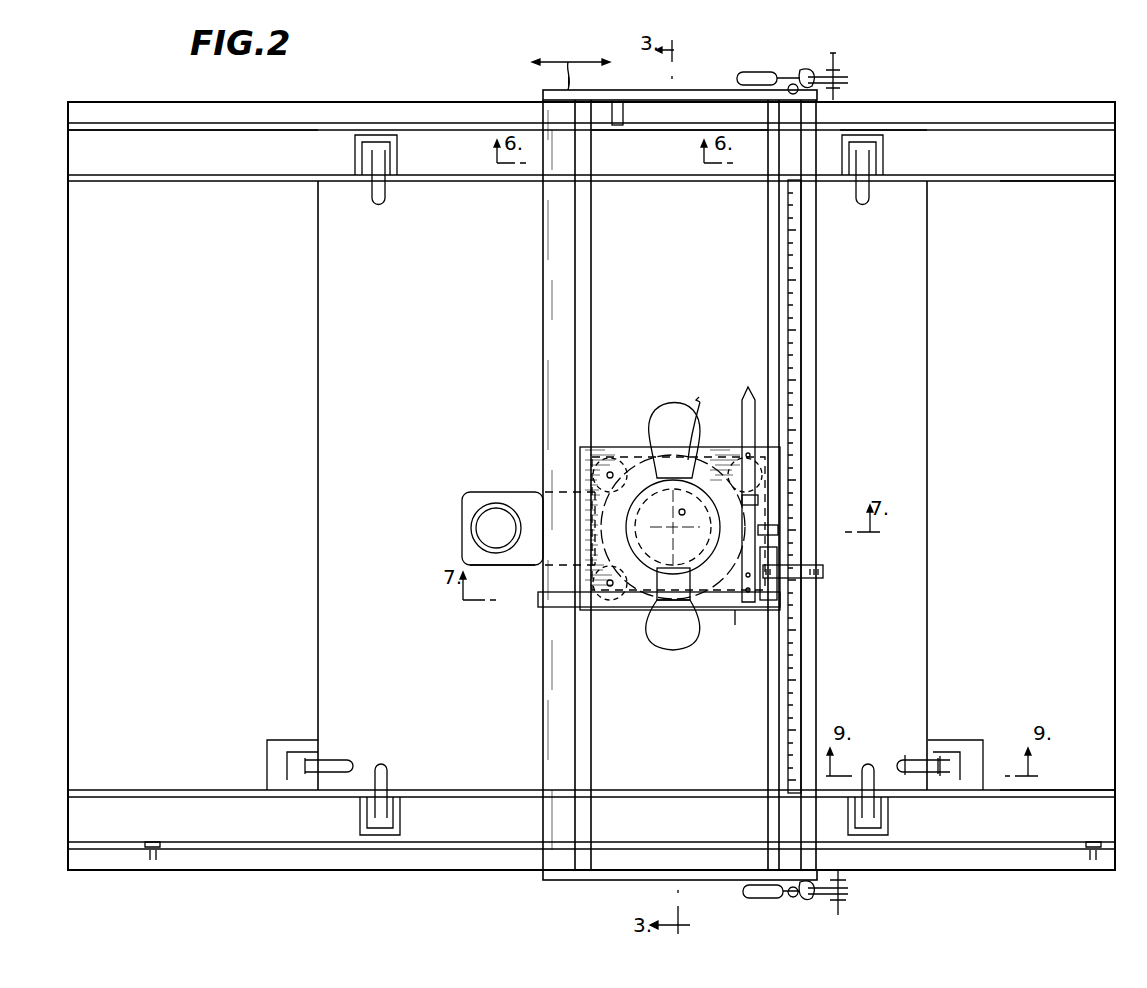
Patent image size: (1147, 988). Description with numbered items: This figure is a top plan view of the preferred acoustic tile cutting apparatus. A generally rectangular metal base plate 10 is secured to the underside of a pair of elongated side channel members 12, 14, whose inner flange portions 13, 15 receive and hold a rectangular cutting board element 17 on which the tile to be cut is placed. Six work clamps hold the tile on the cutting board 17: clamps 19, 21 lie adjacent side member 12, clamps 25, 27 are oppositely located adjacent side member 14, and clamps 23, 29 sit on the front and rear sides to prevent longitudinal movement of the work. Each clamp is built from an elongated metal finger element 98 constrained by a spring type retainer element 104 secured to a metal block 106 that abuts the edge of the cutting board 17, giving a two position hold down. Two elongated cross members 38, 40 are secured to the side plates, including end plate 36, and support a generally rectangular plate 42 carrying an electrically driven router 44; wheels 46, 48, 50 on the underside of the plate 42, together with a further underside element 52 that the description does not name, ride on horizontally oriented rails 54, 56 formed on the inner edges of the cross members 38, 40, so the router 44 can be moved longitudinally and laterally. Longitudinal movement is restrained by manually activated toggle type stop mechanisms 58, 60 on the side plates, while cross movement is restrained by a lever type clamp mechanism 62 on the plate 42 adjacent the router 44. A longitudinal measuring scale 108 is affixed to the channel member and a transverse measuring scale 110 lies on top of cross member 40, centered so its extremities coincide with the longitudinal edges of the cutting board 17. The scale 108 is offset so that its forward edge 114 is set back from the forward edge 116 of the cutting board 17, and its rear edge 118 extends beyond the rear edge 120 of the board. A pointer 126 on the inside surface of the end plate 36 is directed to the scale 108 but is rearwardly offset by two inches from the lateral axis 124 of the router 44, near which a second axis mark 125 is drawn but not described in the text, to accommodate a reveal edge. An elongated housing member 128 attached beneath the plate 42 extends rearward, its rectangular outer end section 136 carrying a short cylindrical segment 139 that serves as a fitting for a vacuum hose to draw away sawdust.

The base plate 10 is at (1093, 537).
The side member 12 is at (940, 858).
The inner flange portion 13 is at (1085, 792).
The side member 14 is at (925, 105).
The inner flange portion 15 is at (1052, 184).
The cutting board element 17 is at (908, 392).
The work clamp 19 is at (388, 778).
The work clamp 21 is at (888, 742).
The work clamp 23 is at (915, 752).
The work clamp 25 is at (864, 200).
The work clamp 27 is at (380, 190).
The work clamp 29 is at (340, 760).
The side plate 36 is at (690, 92).
The cross member 38 is at (548, 360).
The cross member 40 is at (805, 298).
The plate 42 is at (633, 447).
The cutting tool 44 is at (744, 493).
The wheel 46 is at (626, 452).
The wheel 48 is at (600, 608).
The wheel 50 is at (765, 452).
The stop 52 is at (735, 618).
The rail 54 is at (592, 358).
The rail 56 is at (768, 334).
The toggle type stop mechanism 58 is at (796, 902).
The toggle type stop mechanism 60 is at (815, 64).
The lever type clamp mechanism 62 is at (770, 612).
The finger element 98 is at (912, 778).
The spring type retainer element 104 is at (955, 775).
The metal block 106 is at (966, 748).
The longitudinal measuring scale 108 is at (696, 158).
The transverse measuring scale 110 is at (795, 372).
The forward edge 114 is at (885, 130).
The forward edge 116 is at (928, 412).
The rear edge 118 is at (283, 132).
The rear edge 120 is at (308, 462).
The axis 124 is at (692, 532).
The cutter 125 is at (682, 512).
The pointer 126 is at (618, 110).
The housing member 128 is at (500, 492).
The outer end section 136 is at (515, 568).
The cylindrical segment 139 is at (466, 522).